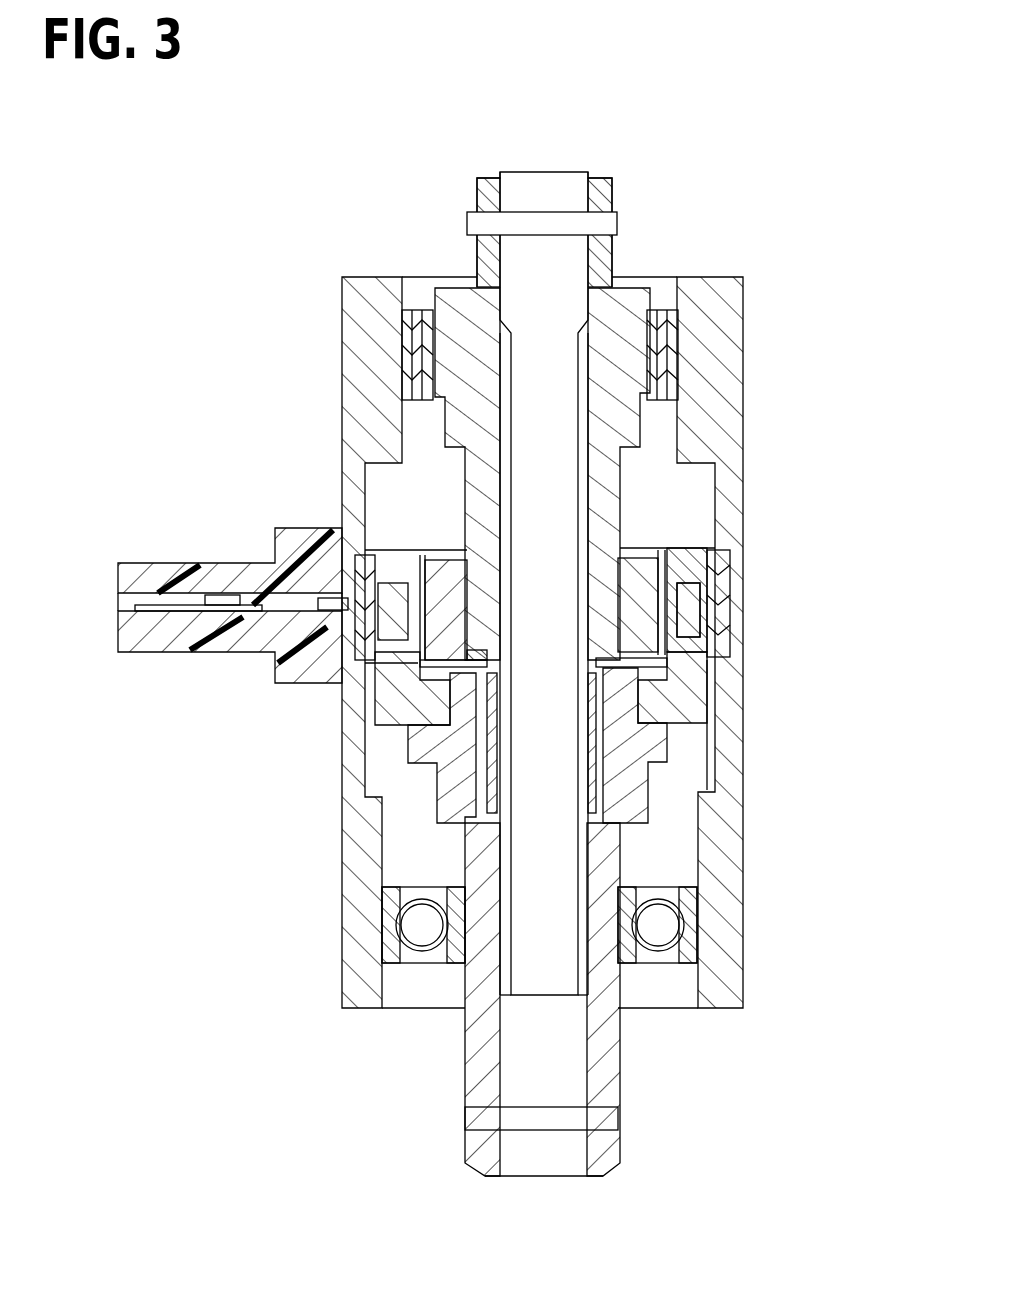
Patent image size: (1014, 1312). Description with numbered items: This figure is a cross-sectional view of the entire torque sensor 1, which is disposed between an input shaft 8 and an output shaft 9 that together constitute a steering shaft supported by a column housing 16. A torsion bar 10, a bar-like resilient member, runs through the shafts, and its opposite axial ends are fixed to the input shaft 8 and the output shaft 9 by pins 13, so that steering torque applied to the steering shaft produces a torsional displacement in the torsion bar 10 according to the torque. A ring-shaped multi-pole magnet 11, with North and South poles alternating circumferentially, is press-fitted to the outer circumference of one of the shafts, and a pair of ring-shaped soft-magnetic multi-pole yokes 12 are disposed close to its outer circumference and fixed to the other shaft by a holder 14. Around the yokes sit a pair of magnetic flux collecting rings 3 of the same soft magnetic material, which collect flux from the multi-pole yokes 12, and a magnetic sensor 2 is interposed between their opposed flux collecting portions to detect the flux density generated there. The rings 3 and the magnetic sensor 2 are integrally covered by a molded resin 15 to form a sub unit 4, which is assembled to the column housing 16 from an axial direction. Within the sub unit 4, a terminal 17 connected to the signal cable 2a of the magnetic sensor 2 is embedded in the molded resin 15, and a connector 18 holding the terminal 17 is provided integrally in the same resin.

The torque sensor 1 is at (200, 427).
The magnetic sensor 2 is at (320, 637).
The signal cable 2a is at (270, 630).
The magnetic flux collecting rings 3 is at (347, 577).
The sub unit 4 is at (203, 670).
The input shaft 8 is at (600, 197).
The output shaft 9 is at (473, 1083).
The torsion bar 10 is at (567, 1068).
The multi-pole magnet 11 is at (637, 567).
The multi-pole yokes 12 is at (700, 667).
The pins 13 is at (470, 222).
The holder 14 is at (690, 713).
The molded resin 15 is at (265, 575).
The column housing 16 is at (342, 374).
The terminal 17 is at (137, 610).
The connector 18 is at (140, 573).